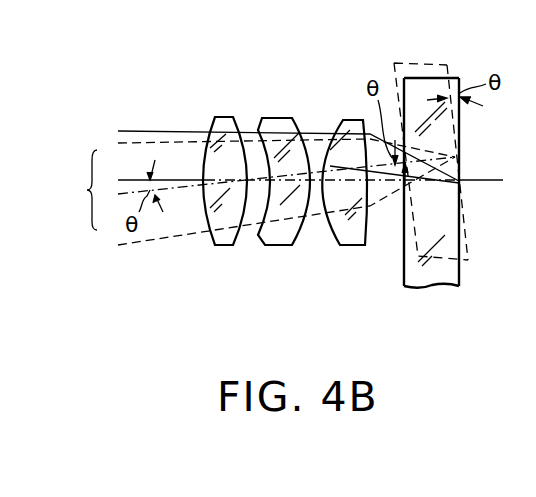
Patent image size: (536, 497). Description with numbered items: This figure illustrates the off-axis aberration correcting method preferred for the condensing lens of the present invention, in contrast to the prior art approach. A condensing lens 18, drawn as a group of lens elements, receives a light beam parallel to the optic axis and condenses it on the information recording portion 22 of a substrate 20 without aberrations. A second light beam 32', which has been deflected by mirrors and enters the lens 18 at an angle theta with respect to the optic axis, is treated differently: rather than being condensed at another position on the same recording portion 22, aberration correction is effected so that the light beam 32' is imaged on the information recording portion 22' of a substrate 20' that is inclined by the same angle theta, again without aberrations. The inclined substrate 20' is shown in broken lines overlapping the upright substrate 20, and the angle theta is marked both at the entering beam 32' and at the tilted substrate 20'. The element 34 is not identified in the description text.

The condensing lens 18 is at (365, 297).
The lens element 34 is at (253, 262).
The substrate 20 is at (464, 213).
The inclined substrate 20' is at (465, 181).
The information recording portion 22 is at (491, 182).
The information recording portion of the inclined substrate 22' is at (491, 164).
The light beam 32' is at (125, 188).